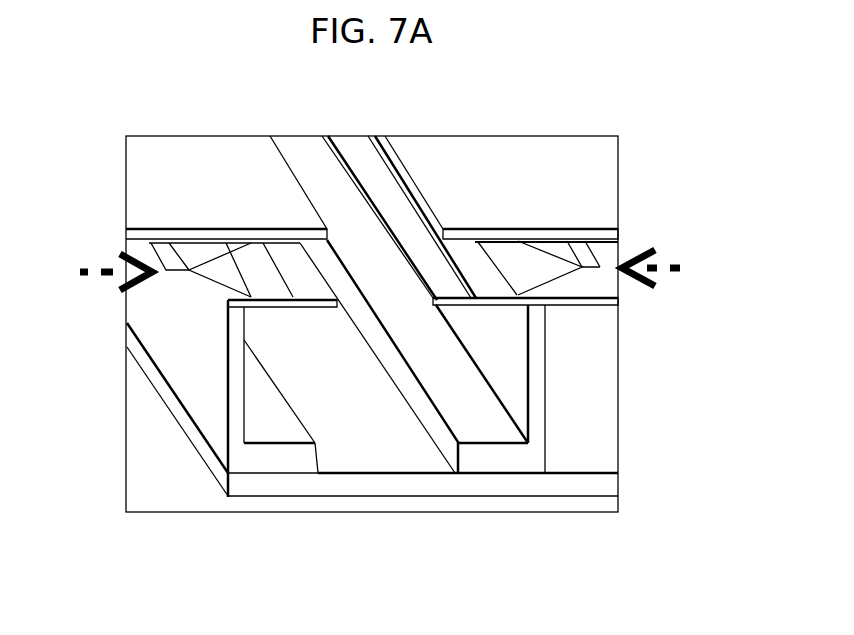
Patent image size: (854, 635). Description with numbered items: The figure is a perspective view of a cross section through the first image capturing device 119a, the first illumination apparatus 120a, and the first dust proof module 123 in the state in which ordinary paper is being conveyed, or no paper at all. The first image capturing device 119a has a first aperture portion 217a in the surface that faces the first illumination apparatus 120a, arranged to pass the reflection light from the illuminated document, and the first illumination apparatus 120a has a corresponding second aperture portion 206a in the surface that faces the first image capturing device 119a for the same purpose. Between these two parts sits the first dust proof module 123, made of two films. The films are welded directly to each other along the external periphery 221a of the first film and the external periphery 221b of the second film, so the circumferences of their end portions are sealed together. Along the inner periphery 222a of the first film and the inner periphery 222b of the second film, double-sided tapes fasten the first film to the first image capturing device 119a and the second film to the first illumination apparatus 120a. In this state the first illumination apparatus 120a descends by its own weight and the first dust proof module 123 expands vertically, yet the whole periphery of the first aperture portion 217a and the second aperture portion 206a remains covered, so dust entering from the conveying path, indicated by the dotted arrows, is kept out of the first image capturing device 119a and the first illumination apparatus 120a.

The first image capturing device 119a is at (455, 152).
The first illumination apparatus 120a is at (387, 450).
The first dust proof module 123 is at (220, 248).
The second aperture portion 206a is at (400, 302).
The first aperture portion 217a is at (357, 227).
The external periphery of the first film 221a is at (170, 255).
The external periphery of the second film 221b is at (169, 272).
The inner periphery of the first film 222a is at (265, 232).
The inner periphery of the second film 222b is at (283, 307).